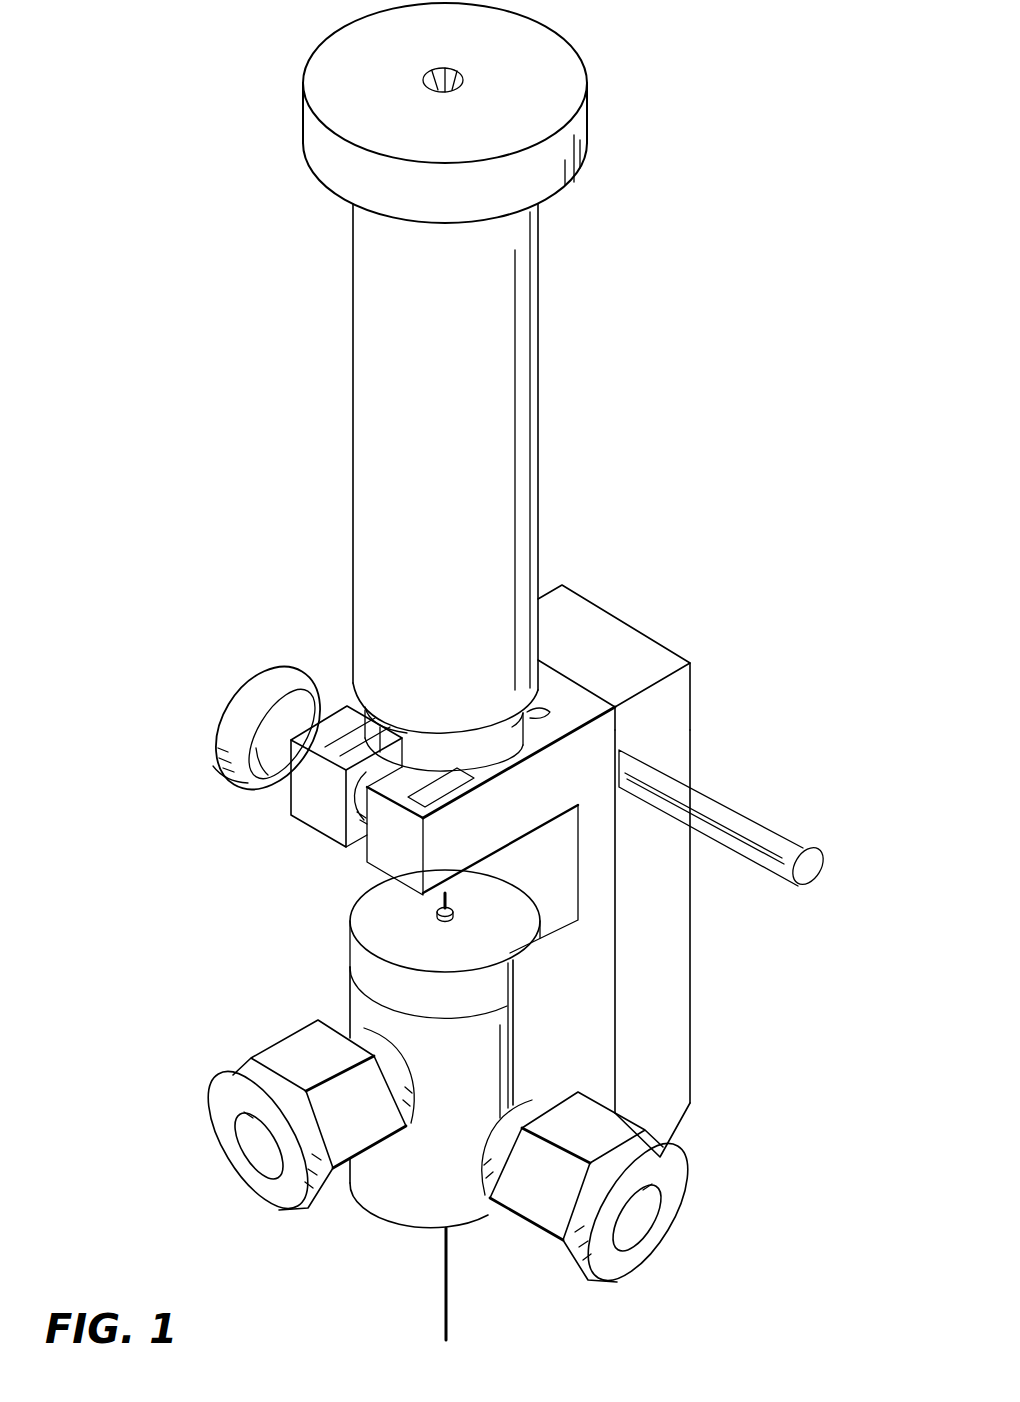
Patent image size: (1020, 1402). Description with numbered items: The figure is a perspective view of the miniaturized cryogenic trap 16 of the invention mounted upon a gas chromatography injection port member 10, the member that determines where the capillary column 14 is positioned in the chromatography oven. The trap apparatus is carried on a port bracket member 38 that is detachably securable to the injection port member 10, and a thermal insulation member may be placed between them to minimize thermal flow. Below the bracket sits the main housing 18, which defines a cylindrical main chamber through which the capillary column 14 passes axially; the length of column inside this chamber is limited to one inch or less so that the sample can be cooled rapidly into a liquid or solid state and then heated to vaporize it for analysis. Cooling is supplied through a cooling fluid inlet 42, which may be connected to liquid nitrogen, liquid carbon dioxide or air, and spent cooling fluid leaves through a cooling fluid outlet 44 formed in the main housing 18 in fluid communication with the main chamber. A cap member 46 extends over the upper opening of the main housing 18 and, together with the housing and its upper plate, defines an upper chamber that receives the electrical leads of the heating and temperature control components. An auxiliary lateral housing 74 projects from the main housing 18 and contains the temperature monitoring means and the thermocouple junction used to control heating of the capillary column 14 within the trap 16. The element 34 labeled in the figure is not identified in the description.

The injection port member 10 is at (457, 414).
The auxiliary lateral housing 74 is at (678, 712).
The main housing 18 is at (580, 1040).
The port bracket member 38 is at (312, 818).
The capillary column 14 is at (441, 907).
The miniaturized cryogenic trap 16 is at (350, 919).
The ferrule 34 is at (437, 917).
The cap member 46 is at (442, 1010).
The cooling fluid inlet 42 is at (255, 1157).
The cooling fluid outlet 44 is at (647, 1220).